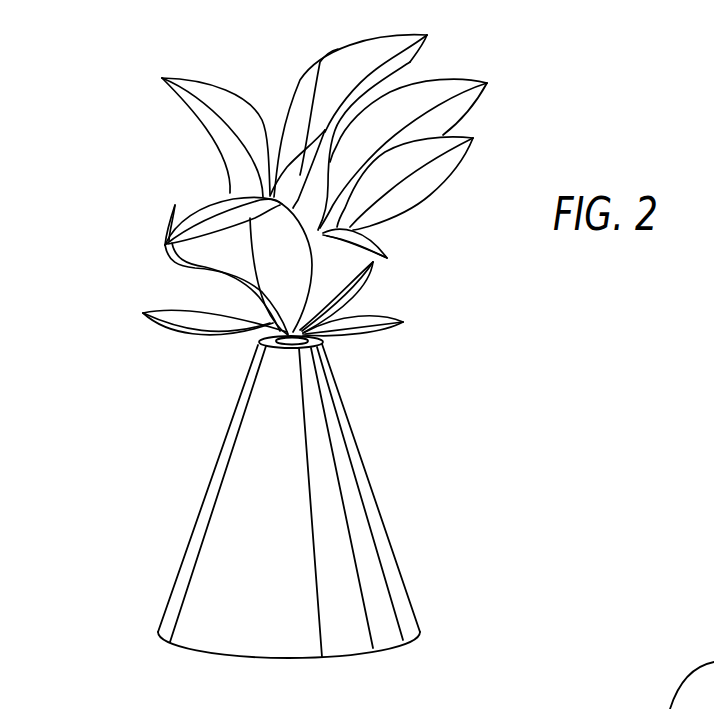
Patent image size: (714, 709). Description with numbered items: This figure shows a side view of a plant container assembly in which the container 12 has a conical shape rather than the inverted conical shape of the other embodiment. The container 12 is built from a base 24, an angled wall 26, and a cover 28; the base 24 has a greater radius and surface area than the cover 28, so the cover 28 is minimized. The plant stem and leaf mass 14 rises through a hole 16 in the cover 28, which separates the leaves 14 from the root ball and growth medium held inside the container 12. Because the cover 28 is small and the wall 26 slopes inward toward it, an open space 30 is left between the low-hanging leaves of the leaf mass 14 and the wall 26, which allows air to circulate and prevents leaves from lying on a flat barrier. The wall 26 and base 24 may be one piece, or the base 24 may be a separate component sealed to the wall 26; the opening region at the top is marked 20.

The container 12 is at (502, 662).
The plant stem and leaf mass 14 is at (123, 57).
The hole 16 is at (275, 330).
The opening 20 is at (287, 342).
The base 24 is at (292, 660).
The wall 26 is at (350, 483).
The cover 28 is at (282, 338).
The open space 30 is at (370, 357).